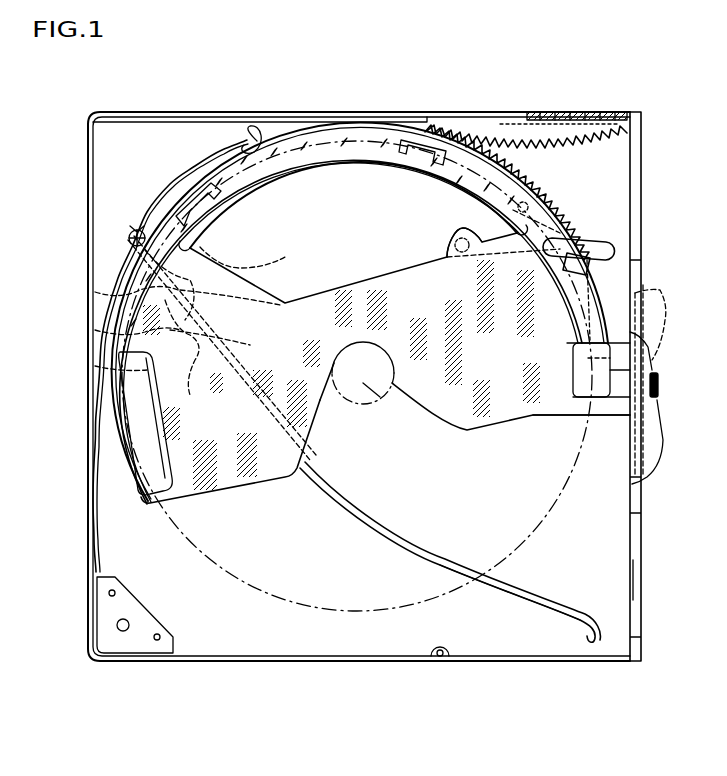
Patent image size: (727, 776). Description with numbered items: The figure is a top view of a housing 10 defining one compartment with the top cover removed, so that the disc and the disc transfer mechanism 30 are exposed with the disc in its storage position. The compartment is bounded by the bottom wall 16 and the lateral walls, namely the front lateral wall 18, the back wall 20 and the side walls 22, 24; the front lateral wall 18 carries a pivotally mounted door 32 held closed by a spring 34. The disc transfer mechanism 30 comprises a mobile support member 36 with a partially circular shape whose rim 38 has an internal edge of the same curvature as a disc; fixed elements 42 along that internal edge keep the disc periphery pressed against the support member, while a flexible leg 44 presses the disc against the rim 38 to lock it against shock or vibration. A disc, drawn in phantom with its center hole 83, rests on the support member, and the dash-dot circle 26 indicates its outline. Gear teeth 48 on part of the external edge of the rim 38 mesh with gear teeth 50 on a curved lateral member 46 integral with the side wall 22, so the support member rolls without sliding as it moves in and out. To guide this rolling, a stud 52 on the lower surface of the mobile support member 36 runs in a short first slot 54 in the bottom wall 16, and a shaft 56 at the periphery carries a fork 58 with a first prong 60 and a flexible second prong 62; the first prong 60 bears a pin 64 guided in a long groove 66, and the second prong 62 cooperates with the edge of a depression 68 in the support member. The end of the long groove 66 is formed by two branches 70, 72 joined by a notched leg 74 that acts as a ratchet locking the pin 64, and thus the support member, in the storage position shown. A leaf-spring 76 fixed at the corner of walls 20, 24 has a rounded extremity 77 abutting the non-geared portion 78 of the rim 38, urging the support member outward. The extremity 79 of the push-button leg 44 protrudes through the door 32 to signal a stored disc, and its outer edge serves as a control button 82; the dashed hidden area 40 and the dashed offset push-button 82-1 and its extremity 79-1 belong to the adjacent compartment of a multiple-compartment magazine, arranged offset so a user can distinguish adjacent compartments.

The housing 10 is at (380, 103).
The bottom wall 16 is at (292, 660).
The front lateral wall 18 is at (641, 182).
The lateral back wall 20 is at (88, 234).
The side wall 22 is at (180, 117).
The side wall 24 is at (188, 661).
The disk 26 is at (455, 662).
The disc transfer mechanism 30 is at (477, 437).
The door 32 is at (641, 582).
The spring 34 is at (576, 111).
The mobile support member 36 is at (520, 418).
The rim 38 is at (355, 133).
The hidden pin 40 is at (536, 217).
The fixed elements 42 is at (192, 208).
The flexible leg 44 is at (587, 333).
The lateral member 46 is at (495, 130).
The gear teeth 48 is at (553, 205).
The gear teeth 50 is at (530, 138).
The stud 52 is at (455, 258).
The first slot 54 is at (605, 245).
The shaft 56 is at (128, 238).
The fork 58 is at (100, 293).
The first prong 60 is at (100, 327).
The second prong 62 is at (255, 318).
The pin 64 is at (112, 372).
The long groove 66 is at (345, 538).
The depression 68 is at (218, 276).
The branch 70 is at (228, 347).
The branch 72 is at (186, 392).
The notched leg 74 is at (245, 282).
The leaf-spring 76 is at (215, 178).
The rounded extremity 77 is at (258, 135).
The non-geared portion 78 is at (287, 130).
The extremity 79 is at (657, 412).
The button hidden portion 79-1 is at (655, 373).
The control button 82 is at (658, 490).
The control push-button 82-1 is at (648, 300).
The center hole 83 is at (383, 400).